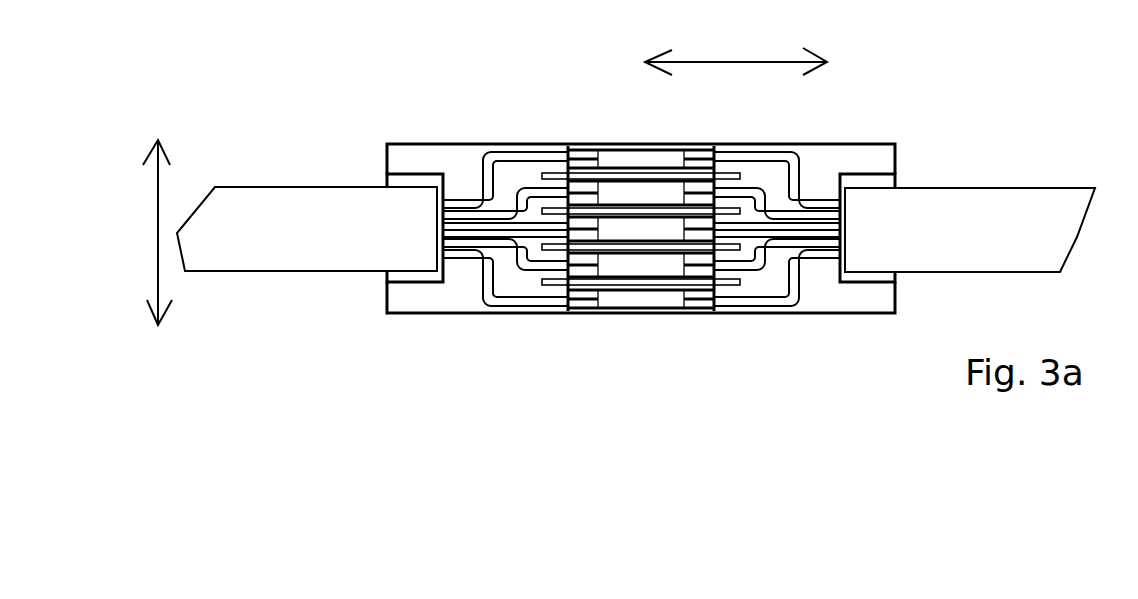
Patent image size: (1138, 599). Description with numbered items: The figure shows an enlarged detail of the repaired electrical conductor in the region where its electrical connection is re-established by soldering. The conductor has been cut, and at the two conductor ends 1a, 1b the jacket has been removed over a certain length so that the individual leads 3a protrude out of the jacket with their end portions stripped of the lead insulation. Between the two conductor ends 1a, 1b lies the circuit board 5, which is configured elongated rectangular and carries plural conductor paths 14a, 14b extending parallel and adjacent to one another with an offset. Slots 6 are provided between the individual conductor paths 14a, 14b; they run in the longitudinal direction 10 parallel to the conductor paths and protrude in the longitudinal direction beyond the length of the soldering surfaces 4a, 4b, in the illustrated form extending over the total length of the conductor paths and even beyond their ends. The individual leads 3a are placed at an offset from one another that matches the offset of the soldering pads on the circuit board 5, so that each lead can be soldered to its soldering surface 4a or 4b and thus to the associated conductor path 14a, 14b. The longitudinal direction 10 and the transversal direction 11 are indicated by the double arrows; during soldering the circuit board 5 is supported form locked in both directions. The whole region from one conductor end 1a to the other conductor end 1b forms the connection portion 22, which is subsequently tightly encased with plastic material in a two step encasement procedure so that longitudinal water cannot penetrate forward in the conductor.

The conductor end 1a is at (260, 260).
The conductor end 1b is at (983, 237).
The individual lead 3a is at (507, 298).
The soldering surface 4a is at (565, 147).
The soldering surface 4b is at (702, 148).
The circuit board 5 is at (393, 173).
The slot 6 is at (643, 176).
The longitudinal direction 10 is at (728, 62).
The transversal direction 11 is at (157, 245).
The conductor path 14a is at (647, 302).
The conductor path 14b is at (610, 265).
The connection portion 22 is at (382, 400).